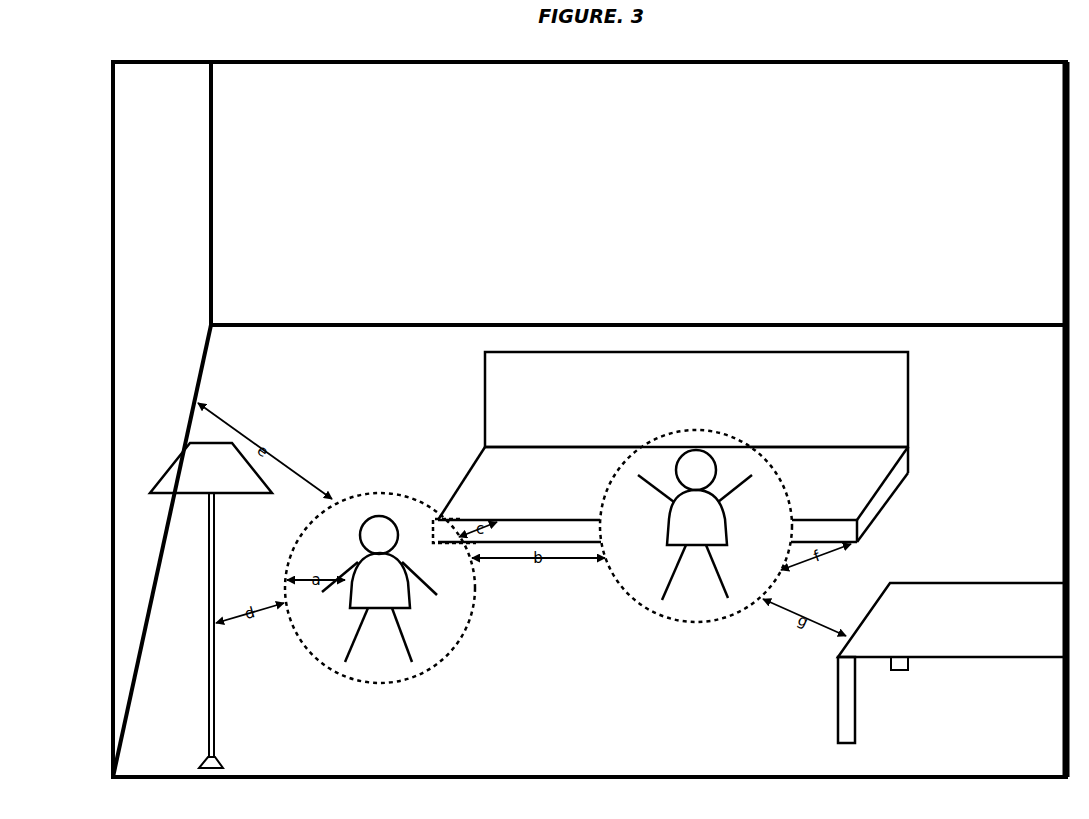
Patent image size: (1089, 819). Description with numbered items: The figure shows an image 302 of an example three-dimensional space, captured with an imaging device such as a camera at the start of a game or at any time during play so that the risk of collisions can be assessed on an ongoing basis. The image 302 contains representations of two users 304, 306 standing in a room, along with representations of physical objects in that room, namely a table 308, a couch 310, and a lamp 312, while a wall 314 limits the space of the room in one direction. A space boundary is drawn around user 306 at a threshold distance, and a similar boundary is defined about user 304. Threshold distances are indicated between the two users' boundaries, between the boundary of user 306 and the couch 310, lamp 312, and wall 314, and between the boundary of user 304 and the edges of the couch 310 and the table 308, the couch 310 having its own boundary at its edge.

The image 302 is at (78, 77).
The user 304 is at (696, 526).
The user 306 is at (380, 588).
The table 308 is at (951, 663).
The couch 310 is at (670, 447).
The lamp 312 is at (211, 605).
The wall 314 is at (589, 419).